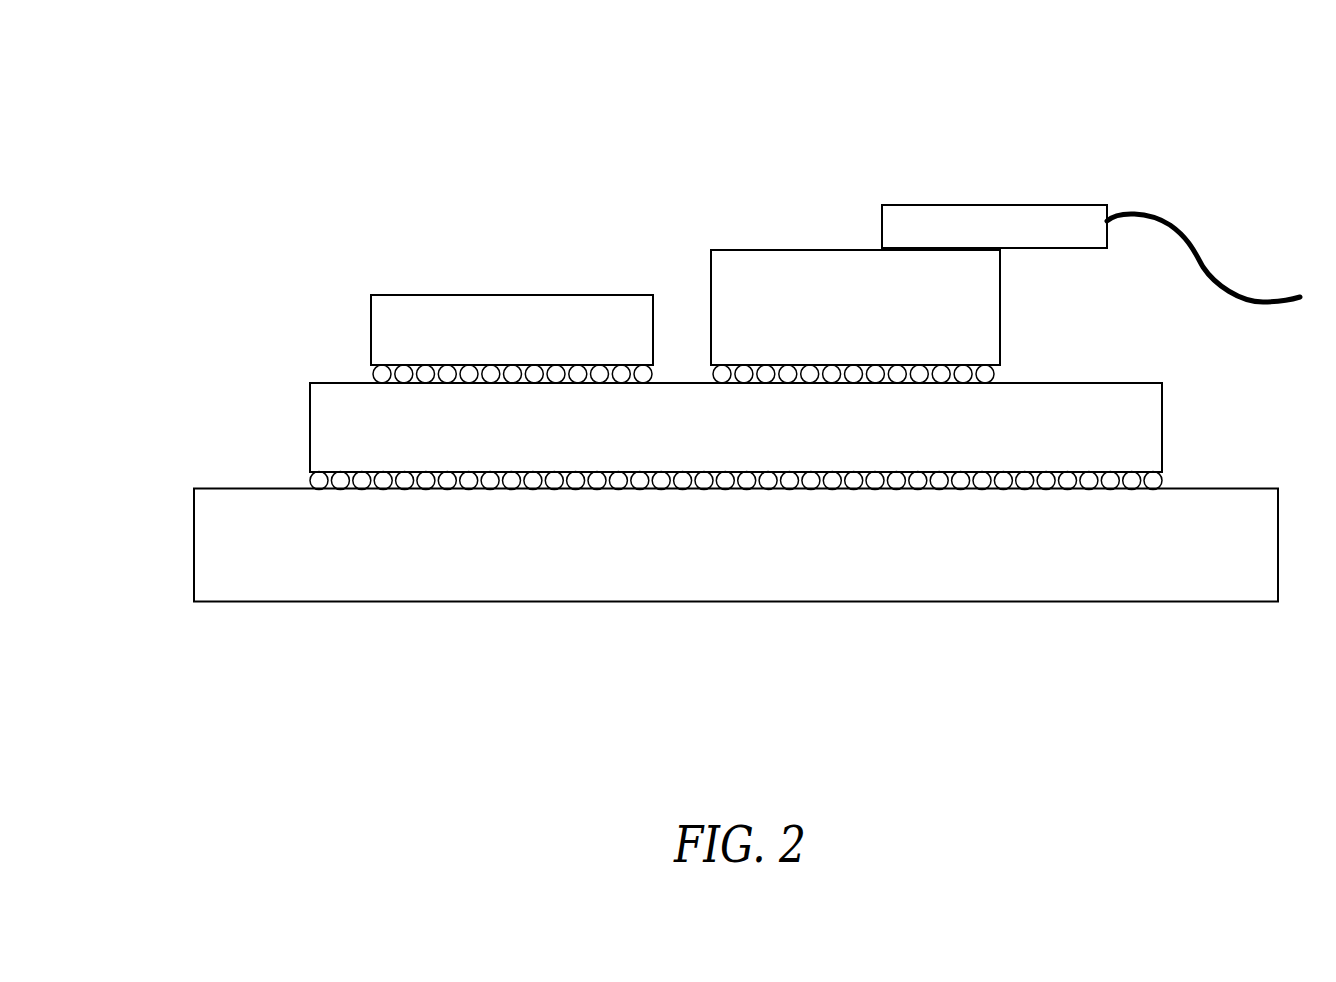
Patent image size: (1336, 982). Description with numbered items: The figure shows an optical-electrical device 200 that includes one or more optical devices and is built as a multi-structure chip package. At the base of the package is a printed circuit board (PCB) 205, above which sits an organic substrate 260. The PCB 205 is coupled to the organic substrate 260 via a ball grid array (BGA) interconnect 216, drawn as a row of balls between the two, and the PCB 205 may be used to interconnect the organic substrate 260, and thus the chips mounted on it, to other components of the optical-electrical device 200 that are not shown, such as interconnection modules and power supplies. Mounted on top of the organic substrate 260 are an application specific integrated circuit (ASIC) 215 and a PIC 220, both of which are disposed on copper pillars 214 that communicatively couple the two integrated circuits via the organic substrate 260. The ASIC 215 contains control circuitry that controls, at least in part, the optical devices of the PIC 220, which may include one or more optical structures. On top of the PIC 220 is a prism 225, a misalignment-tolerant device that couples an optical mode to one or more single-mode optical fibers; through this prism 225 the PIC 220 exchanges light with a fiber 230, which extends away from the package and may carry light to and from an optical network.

The optical-electrical device 200 is at (385, 130).
The printed circuit board 205 is at (736, 545).
The copper pillars 214 is at (368, 372).
The application specific integrated circuit 215 is at (512, 330).
The ball grid array interconnect 216 is at (297, 476).
The PIC 220 is at (855, 307).
The prism 225 is at (994, 226).
The fiber 230 is at (1162, 218).
The organic substrate 260 is at (736, 427).